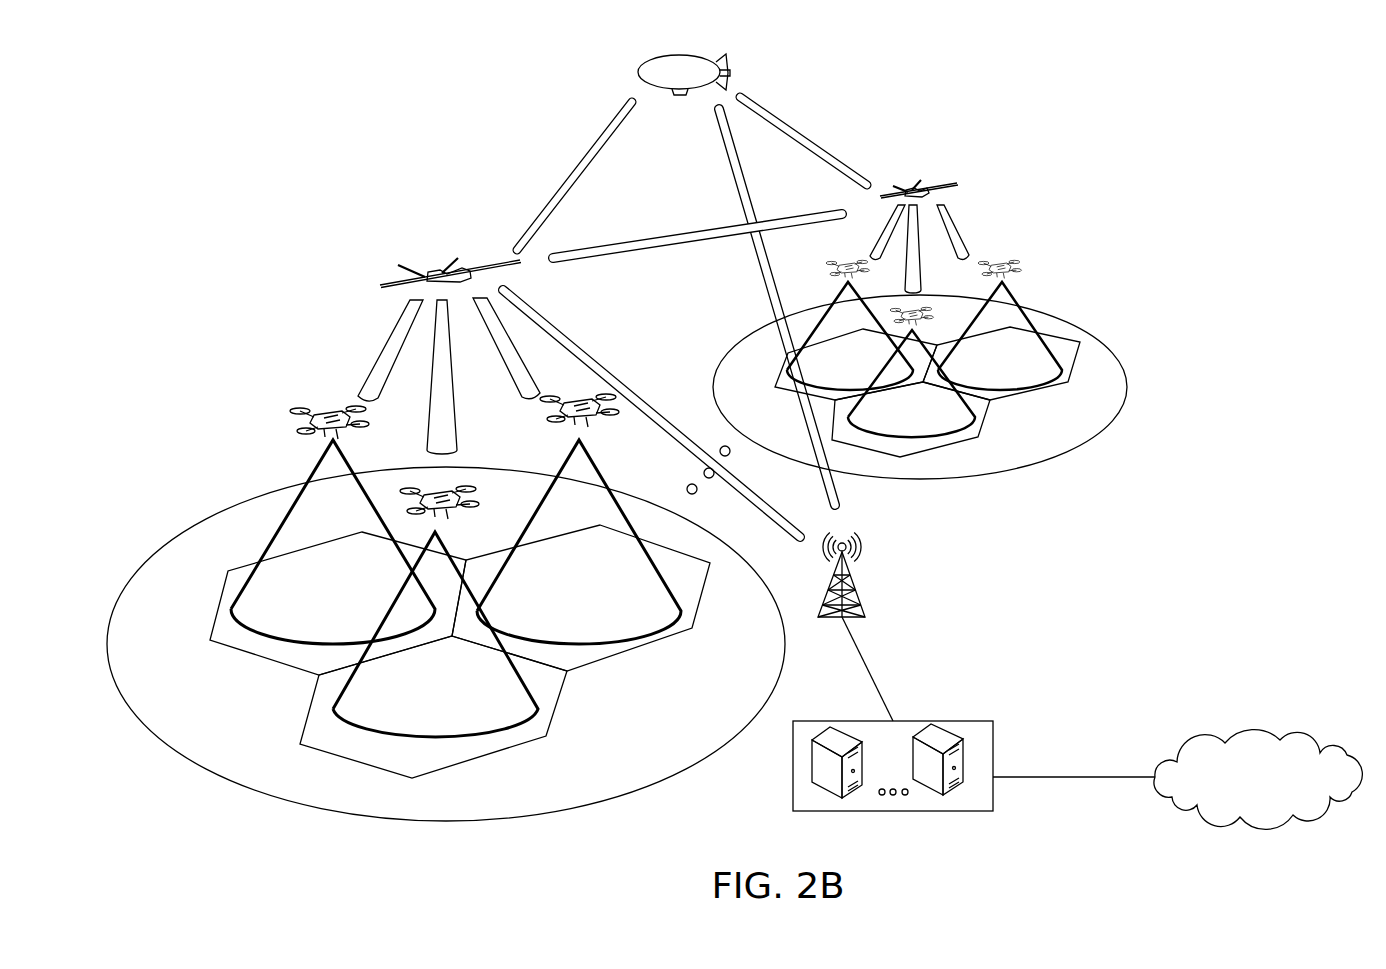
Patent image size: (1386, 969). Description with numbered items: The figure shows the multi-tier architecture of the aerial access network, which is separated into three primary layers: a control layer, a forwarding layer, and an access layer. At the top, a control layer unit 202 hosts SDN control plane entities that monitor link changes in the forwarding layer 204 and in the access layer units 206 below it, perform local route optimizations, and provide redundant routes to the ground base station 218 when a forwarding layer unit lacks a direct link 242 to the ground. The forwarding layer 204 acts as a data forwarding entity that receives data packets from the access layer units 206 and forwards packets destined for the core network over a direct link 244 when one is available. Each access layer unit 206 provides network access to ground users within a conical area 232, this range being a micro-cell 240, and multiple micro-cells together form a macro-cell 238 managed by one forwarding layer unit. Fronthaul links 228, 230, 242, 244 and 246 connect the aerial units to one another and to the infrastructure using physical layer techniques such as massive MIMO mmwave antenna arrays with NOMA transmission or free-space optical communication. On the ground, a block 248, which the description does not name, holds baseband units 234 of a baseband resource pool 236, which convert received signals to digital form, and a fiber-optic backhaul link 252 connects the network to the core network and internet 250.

The control layer unit 202 is at (730, 66).
The forwarding layer 204 is at (380, 286).
The access layer unit 206 is at (293, 412).
The ground base station 218 is at (852, 580).
The fronthaul link 228 is at (568, 172).
The fronthaul link 230 is at (650, 238).
The conical area 232 is at (277, 527).
The baseband unit 234 is at (952, 745).
The baseband resource pool 236 is at (823, 735).
The macro-cell 238 is at (1127, 382).
The micro-cell 240 is at (990, 406).
The direct link 242 is at (838, 495).
The direct link 244 is at (653, 405).
The fronthaul link 246 is at (862, 662).
The data center / server system 248 is at (995, 730).
The core network 250 is at (1250, 730).
The backhaul link 252 is at (1073, 780).